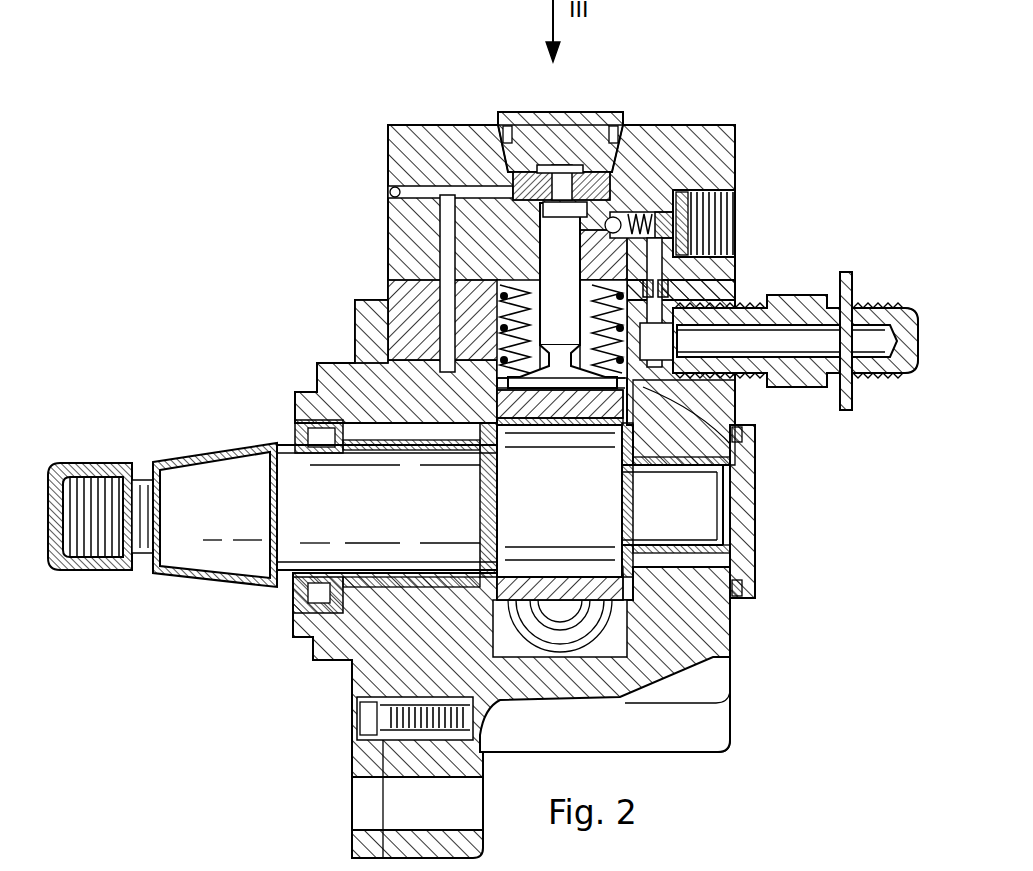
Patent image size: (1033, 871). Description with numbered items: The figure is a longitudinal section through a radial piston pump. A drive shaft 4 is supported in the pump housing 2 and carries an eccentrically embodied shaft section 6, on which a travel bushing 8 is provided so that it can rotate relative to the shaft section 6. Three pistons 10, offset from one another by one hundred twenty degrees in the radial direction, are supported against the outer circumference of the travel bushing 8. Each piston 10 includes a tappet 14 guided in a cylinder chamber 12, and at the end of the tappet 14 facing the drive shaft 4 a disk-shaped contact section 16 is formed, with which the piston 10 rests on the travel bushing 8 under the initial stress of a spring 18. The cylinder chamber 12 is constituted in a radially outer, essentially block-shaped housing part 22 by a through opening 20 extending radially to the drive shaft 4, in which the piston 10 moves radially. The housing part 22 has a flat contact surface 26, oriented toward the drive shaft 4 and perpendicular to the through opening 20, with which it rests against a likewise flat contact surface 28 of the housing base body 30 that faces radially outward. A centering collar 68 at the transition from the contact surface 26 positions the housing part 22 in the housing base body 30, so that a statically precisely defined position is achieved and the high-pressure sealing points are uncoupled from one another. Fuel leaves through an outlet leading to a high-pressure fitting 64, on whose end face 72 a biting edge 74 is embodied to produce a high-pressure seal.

The pump housing 2 is at (275, 359).
The drive shaft 4 is at (305, 552).
The eccentric shaft section 6 is at (569, 508).
The travel bushing 8 is at (640, 587).
The piston 10 is at (548, 243).
The cylinder chamber 12 is at (567, 165).
The tappet 14 is at (572, 301).
The disk-shaped contact section 16 is at (548, 392).
The spring 18 is at (388, 318).
The through opening 20 is at (545, 227).
The housing part 22 is at (700, 122).
The contact surface 26 is at (735, 272).
The contact surface 28 is at (722, 280).
The housing base body 30 is at (713, 450).
The high-pressure fitting 64 is at (808, 293).
The centering collar 68 is at (610, 280).
The end face 72 is at (705, 408).
The biting edge 74 is at (705, 408).